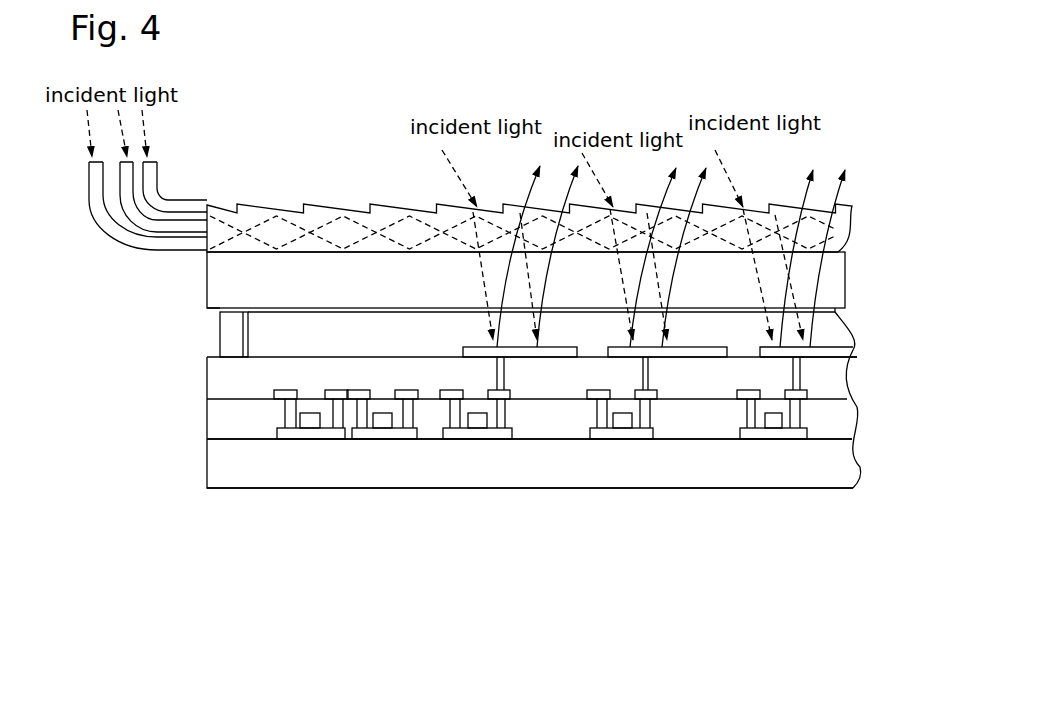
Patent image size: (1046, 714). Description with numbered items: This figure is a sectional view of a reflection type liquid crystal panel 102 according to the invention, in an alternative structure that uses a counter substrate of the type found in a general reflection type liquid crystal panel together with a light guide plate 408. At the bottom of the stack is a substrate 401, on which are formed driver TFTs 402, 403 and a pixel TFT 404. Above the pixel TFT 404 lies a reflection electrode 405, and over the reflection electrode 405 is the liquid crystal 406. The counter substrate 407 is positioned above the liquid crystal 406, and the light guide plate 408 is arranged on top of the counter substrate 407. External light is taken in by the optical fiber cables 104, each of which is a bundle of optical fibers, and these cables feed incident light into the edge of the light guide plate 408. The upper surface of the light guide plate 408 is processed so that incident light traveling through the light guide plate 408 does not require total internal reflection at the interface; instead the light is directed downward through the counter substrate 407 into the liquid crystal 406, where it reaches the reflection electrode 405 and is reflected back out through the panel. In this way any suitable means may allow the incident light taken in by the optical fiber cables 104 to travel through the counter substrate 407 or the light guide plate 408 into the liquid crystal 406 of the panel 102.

The reflection type liquid crystal panel 102 is at (464, 378).
The optical fiber cables 104 is at (162, 195).
The substrate 401 is at (252, 460).
The driver TFT 402 is at (312, 433).
The driver TFT 403 is at (385, 433).
The pixel TFT 404 is at (475, 433).
The reflection electrode 405 is at (555, 353).
The liquid crystal 406 is at (267, 342).
The counter substrate 407 is at (237, 285).
The light guide plate 408 is at (378, 207).